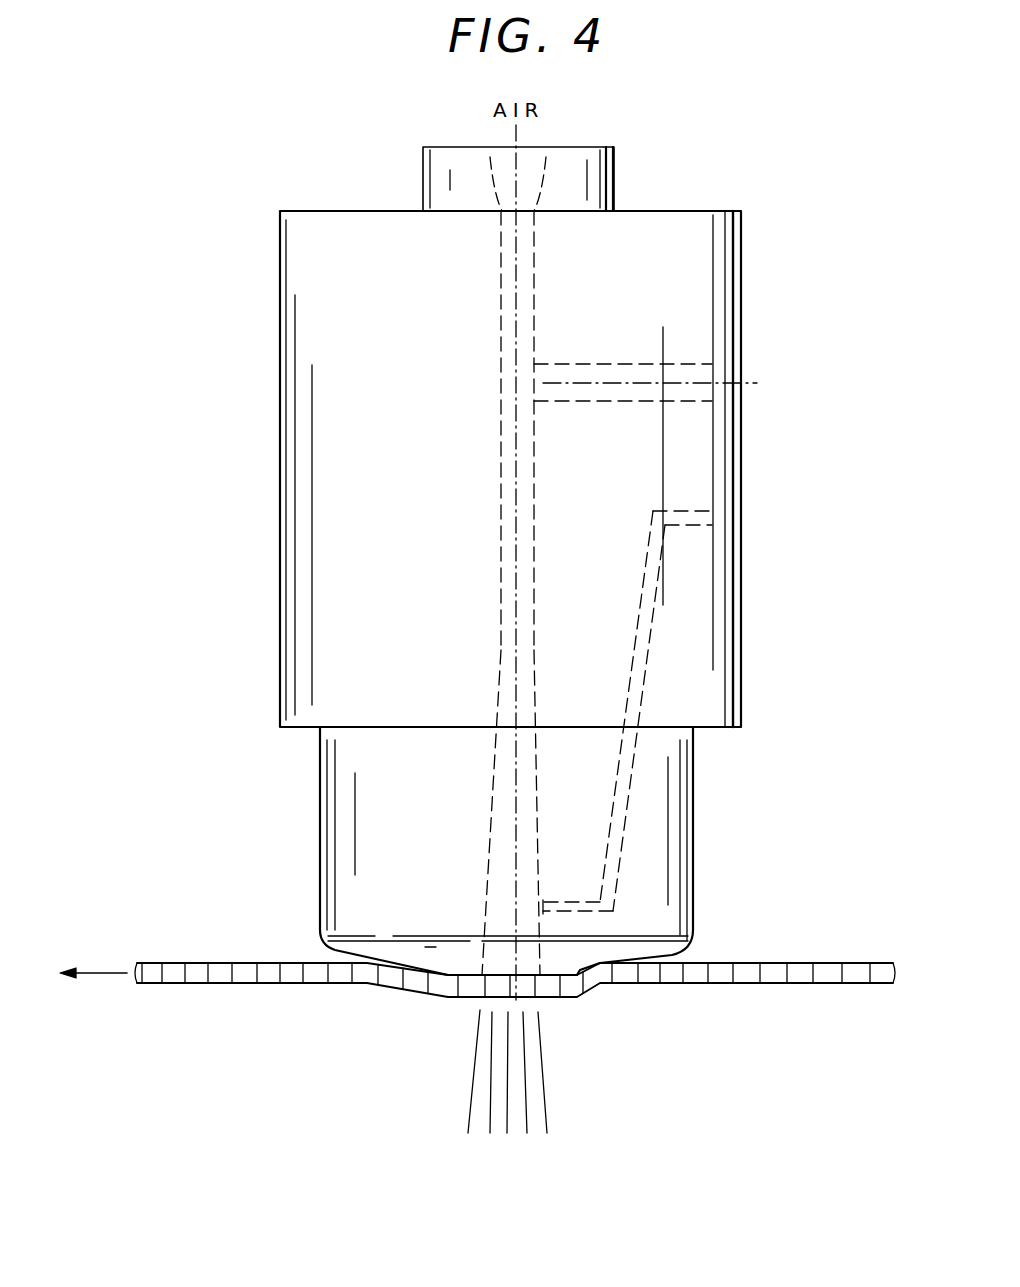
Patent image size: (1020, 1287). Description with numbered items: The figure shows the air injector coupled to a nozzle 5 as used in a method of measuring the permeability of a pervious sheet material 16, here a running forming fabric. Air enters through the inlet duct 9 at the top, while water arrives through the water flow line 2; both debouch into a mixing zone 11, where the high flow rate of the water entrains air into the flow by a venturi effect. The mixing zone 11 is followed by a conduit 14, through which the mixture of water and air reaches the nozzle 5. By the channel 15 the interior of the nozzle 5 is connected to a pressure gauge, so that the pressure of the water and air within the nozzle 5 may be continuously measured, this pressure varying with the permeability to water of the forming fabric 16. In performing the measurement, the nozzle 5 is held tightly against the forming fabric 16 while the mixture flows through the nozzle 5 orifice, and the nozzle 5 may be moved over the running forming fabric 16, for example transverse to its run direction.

The inlet duct 9 is at (538, 190).
The water flow line 2 is at (706, 363).
The mixing zone 11 is at (534, 488).
The channel 15 is at (652, 632).
The conduit 14 is at (527, 827).
The nozzle 5 is at (693, 903).
The pervious sheet material 16 is at (793, 962).